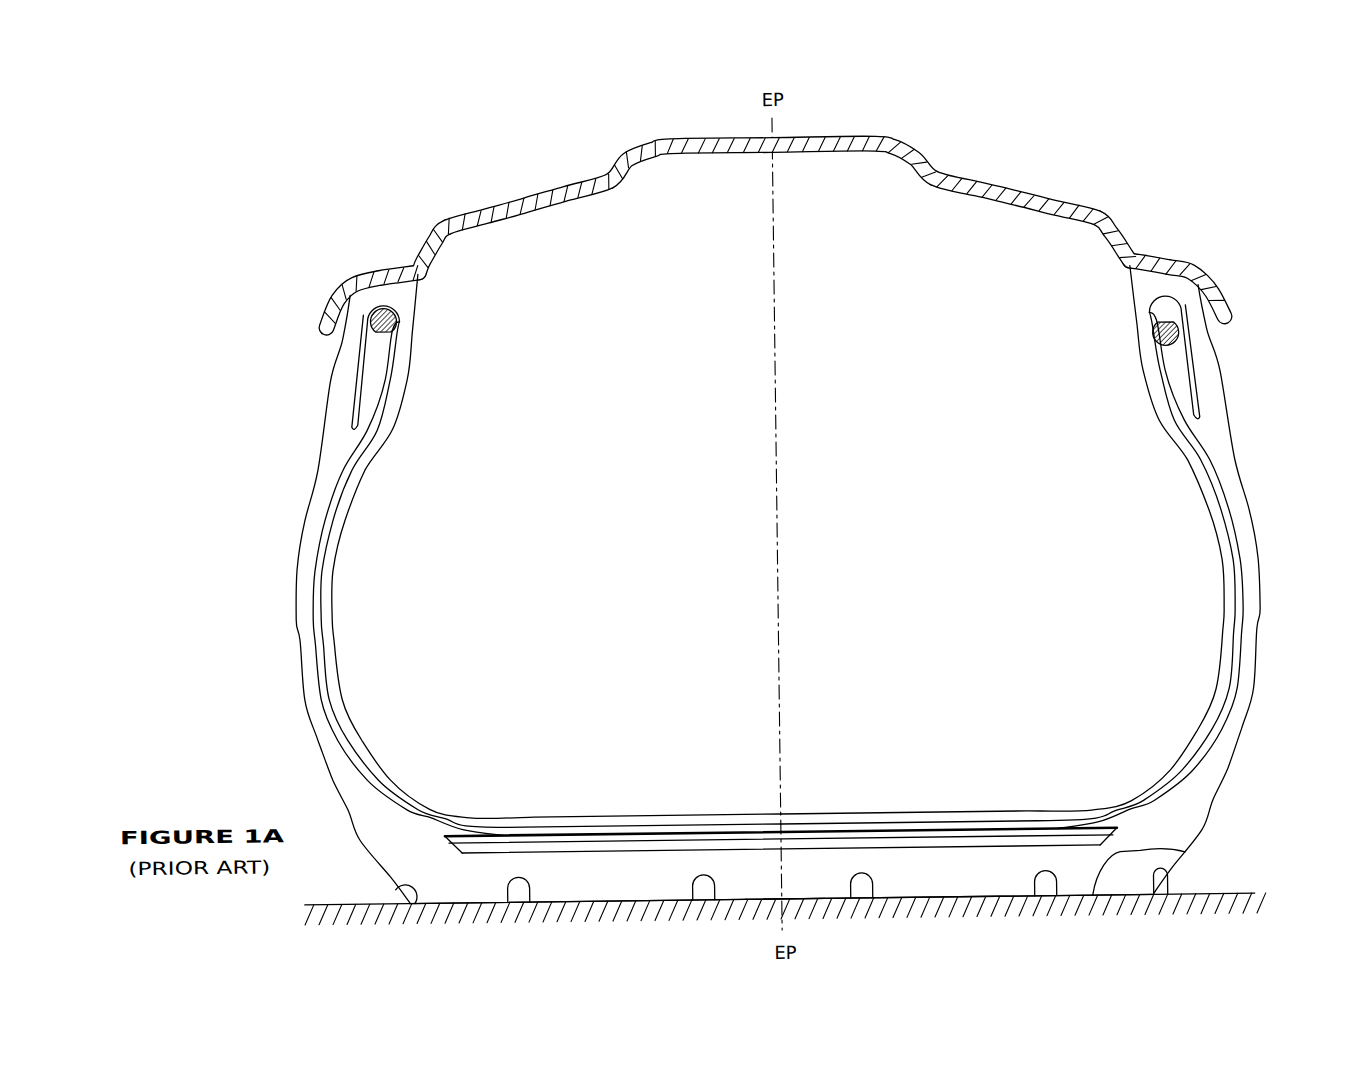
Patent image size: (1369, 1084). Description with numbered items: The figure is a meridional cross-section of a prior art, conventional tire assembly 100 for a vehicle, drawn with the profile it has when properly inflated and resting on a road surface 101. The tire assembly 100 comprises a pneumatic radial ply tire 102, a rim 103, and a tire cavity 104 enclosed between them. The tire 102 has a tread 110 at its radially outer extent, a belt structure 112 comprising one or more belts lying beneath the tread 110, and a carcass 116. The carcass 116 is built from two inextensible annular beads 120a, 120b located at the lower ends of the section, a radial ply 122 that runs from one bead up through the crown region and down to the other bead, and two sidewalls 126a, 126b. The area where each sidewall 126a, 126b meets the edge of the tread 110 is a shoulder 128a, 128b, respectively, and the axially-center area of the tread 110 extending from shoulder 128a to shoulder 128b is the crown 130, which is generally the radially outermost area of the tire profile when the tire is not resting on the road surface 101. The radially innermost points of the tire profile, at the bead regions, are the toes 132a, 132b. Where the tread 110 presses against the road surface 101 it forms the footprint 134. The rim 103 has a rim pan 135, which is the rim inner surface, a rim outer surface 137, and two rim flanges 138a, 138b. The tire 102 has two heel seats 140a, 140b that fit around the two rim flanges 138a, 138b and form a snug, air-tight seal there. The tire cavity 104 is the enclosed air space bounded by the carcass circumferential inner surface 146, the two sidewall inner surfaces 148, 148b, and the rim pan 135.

The tire assembly 100 is at (1162, 135).
The road surface 101 is at (1238, 899).
The pneumatic radial ply tire 102 is at (1245, 390).
The rim 103 is at (1016, 181).
The tire cavity 104 is at (1138, 562).
The tread 110 is at (980, 899).
The belt structure 112 is at (936, 840).
The carcass 116 is at (634, 811).
The bead 120a is at (400, 318).
The bead 120b is at (1180, 318).
The radial ply 122 is at (321, 656).
The sidewall 126a is at (295, 614).
The sidewall 126b is at (1259, 606).
The shoulder 128a is at (395, 886).
The shoulder 128b is at (1165, 880).
The crown 130 is at (795, 899).
The toe 132a is at (418, 262).
The toe 132b is at (1134, 262).
The footprint 134 is at (1181, 857).
The rim pan 135 is at (529, 210).
The rim outer surface 137 is at (918, 165).
The rim flange 138a is at (330, 330).
The rim flange 138b is at (1236, 326).
The heel seat 140a is at (368, 269).
The heel seat 140b is at (1183, 267).
The carcass circumferential inner surface 146 is at (580, 813).
The sidewall inner surface 148 is at (332, 572).
The sidewall inner surface 148b is at (1196, 465).